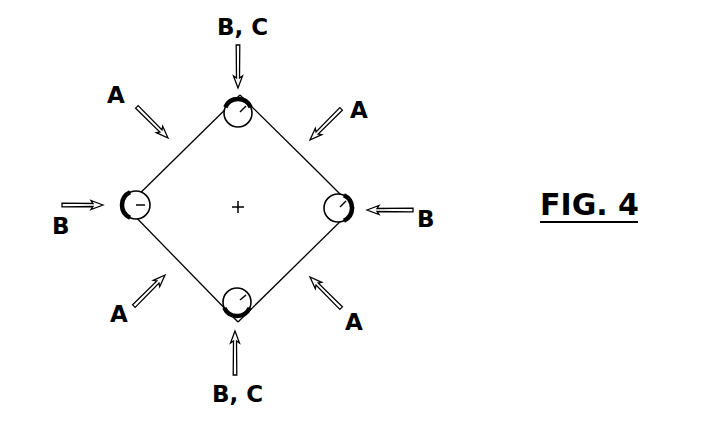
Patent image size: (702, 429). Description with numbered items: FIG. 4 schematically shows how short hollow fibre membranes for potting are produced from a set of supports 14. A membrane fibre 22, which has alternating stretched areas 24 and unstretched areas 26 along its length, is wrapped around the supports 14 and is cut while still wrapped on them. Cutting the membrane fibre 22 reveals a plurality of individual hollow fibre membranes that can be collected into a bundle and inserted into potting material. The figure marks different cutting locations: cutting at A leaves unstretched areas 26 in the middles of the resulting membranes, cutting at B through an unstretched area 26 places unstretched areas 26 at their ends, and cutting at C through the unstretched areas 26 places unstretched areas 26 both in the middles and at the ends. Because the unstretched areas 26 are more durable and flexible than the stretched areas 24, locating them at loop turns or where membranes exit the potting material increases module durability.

The supports 14 is at (252, 101).
The membrane fibre 22 is at (277, 129).
The stretched areas 24 is at (329, 183).
The unstretched areas 26 is at (229, 103).